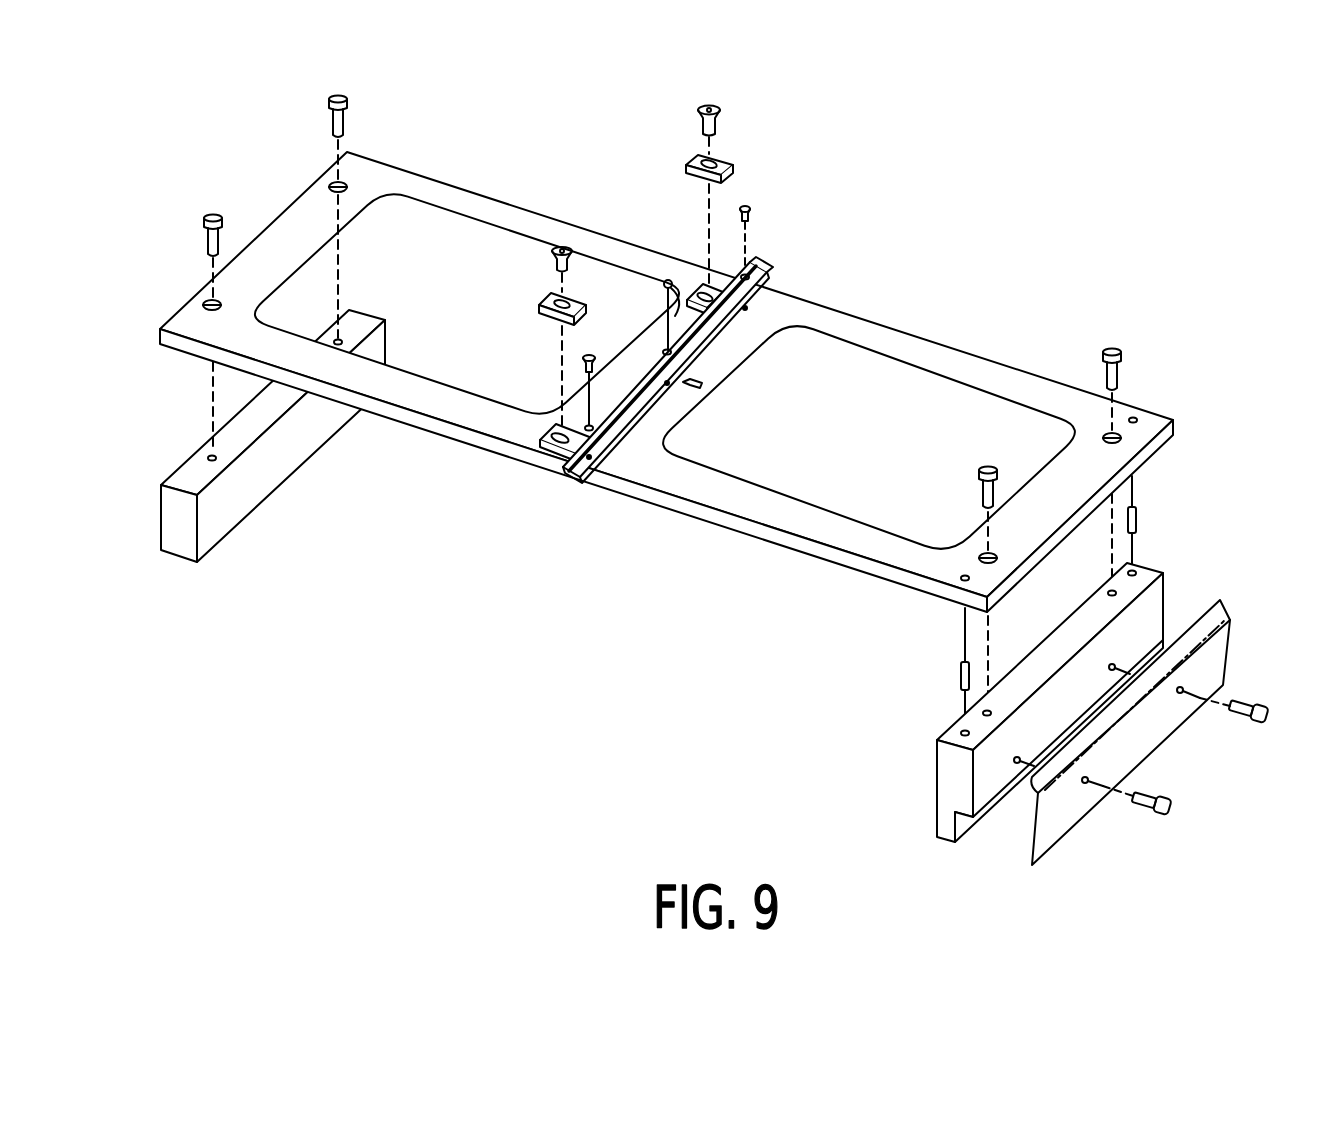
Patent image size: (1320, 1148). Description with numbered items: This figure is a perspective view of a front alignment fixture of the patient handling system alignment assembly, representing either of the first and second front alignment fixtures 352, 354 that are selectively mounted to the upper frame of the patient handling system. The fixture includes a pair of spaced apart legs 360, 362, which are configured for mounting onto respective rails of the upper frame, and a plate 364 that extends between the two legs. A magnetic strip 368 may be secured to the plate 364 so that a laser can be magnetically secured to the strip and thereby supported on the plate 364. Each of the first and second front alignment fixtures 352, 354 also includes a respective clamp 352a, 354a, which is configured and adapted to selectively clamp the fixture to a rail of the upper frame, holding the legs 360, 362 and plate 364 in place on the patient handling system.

The first front alignment fixture 352 is at (893, 176).
The second front alignment fixture 354 is at (714, 487).
The leg 360 is at (928, 793).
The leg 362 is at (222, 545).
The plate 364 is at (867, 325).
The magnetic strip 368 is at (610, 408).
The clamp 352a is at (1052, 840).
The clamp 354a is at (1149, 732).